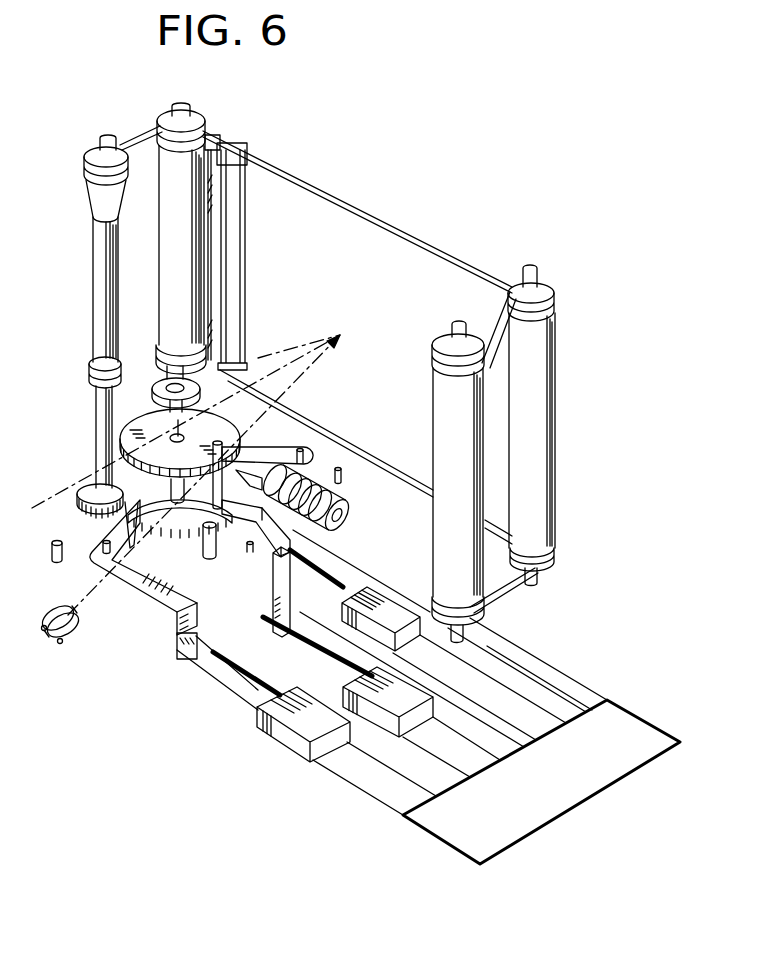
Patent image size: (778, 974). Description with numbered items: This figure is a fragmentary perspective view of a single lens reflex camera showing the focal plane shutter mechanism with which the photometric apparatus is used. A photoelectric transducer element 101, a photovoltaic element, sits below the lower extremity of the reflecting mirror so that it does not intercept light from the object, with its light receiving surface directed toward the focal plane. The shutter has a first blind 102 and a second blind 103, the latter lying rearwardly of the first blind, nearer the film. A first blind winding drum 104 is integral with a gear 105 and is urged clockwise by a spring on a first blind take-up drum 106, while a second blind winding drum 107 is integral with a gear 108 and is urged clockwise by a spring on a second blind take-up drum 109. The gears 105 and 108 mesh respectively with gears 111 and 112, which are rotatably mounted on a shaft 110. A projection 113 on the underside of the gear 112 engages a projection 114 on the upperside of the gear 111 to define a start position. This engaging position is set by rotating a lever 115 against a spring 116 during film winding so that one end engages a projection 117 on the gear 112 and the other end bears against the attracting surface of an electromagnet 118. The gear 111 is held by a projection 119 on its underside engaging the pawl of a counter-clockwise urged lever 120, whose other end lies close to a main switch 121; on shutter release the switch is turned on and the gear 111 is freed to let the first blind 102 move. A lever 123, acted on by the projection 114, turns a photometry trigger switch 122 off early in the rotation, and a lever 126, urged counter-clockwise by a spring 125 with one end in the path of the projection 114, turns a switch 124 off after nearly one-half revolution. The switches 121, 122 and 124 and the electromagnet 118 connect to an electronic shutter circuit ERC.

The photoelectric transducer element 101 is at (64, 645).
The first blind 102 is at (403, 243).
The second blind 103 is at (205, 135).
The first blind winding drum 104 is at (96, 284).
The gear 105 is at (88, 492).
The first blind take-up drum 106 is at (556, 382).
The second blind winding drum 107 is at (170, 252).
The gear 108 is at (107, 400).
The second blind take-up drum 109 is at (438, 392).
The shaft 110 is at (180, 610).
The gear 111 is at (180, 523).
The gear 112 is at (125, 436).
The projection 113 is at (255, 436).
The projection 114 is at (207, 557).
The lever 115 is at (318, 446).
The spring 116 is at (342, 486).
The projection 117 is at (267, 410).
The electromagnet 118 is at (346, 518).
The projection 119 is at (188, 578).
The lever 120 is at (267, 580).
The main switch 121 is at (428, 694).
The photometry trigger switch 122 is at (343, 606).
The lever 123 is at (300, 536).
The switch 124 is at (283, 745).
The spring 125 is at (104, 548).
The lever 126 is at (160, 604).
The electronic shutter circuit ERC is at (455, 842).